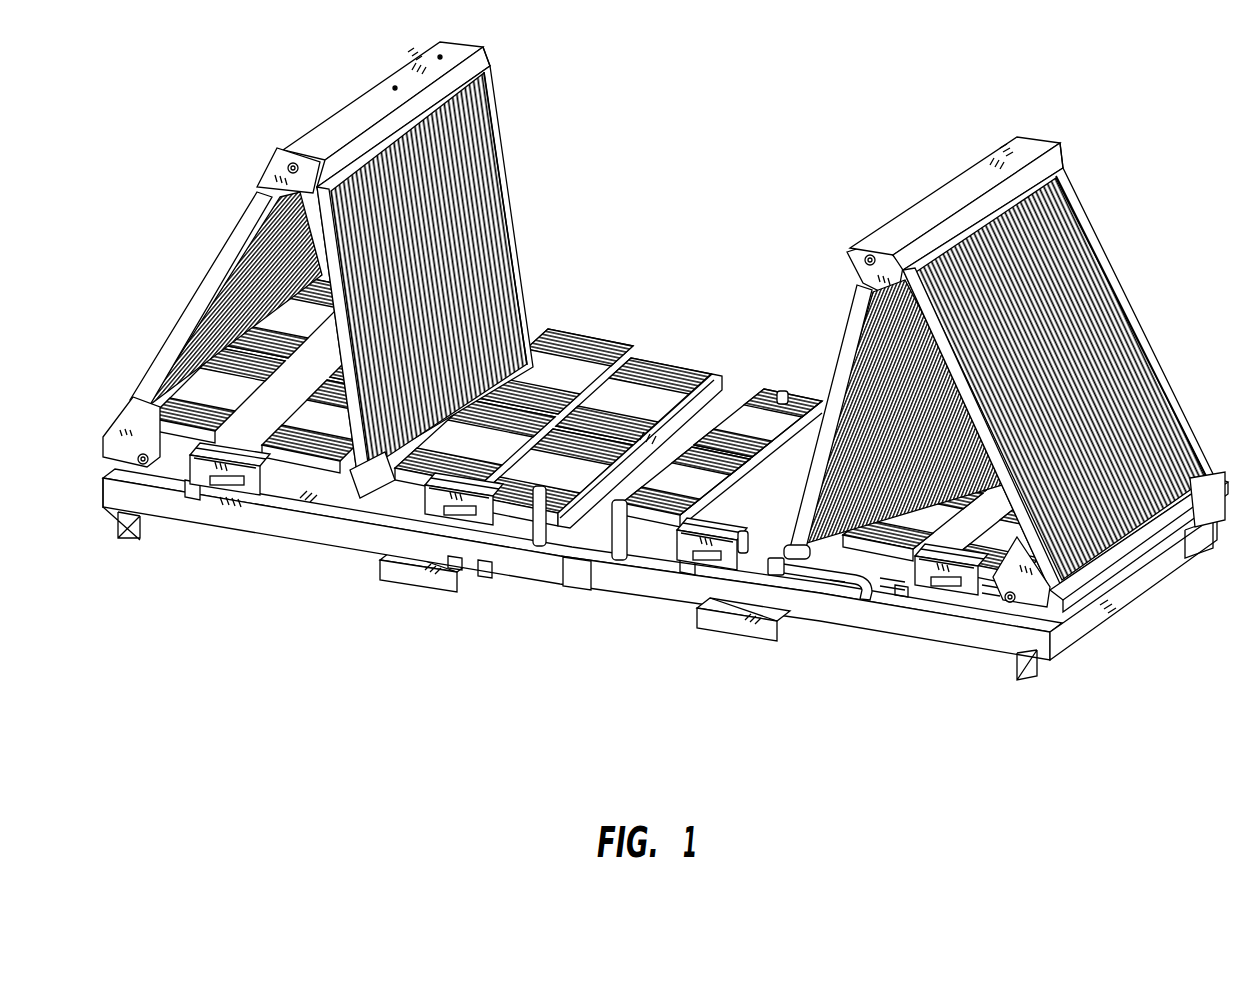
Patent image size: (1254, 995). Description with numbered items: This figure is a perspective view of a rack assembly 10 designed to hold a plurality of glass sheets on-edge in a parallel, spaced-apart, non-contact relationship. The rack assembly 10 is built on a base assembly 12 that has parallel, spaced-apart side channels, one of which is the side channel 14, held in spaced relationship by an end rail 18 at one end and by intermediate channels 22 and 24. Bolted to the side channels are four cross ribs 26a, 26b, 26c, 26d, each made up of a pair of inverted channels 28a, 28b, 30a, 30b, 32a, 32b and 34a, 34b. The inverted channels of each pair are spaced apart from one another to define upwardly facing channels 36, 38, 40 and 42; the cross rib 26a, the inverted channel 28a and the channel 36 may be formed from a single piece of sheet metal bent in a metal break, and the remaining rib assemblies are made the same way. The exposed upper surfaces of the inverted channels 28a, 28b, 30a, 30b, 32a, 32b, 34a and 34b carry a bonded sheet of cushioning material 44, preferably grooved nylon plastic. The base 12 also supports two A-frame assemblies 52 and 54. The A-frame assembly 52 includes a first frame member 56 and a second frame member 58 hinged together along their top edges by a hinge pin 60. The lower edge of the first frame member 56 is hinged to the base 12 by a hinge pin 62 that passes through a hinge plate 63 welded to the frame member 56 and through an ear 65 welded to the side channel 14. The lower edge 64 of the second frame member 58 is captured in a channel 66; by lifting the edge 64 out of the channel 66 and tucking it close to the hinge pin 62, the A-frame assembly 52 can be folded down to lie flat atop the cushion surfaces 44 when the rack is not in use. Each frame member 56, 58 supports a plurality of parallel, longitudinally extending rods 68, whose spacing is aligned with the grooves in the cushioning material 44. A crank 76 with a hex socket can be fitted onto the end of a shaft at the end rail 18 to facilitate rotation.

The rack assembly 10 is at (603, 206).
The base assembly 12 is at (286, 548).
The side channel 14 is at (530, 565).
The end rail 18 is at (1212, 508).
The intermediate channel 22 is at (713, 625).
The intermediate channel 24 is at (455, 559).
The cross rib 26a is at (958, 602).
The cross rib 26b is at (628, 524).
The cross rib 26c is at (421, 488).
The cross rib 26d is at (278, 480).
The inverted channel 28a is at (890, 584).
The inverted channel 28b is at (992, 592).
The inverted channel 30a is at (750, 557).
The inverted channel 30b is at (625, 549).
The inverted channel 32a is at (575, 471).
The inverted channel 32b is at (484, 441).
The inverted channel 34a is at (335, 441).
The inverted channel 34b is at (207, 419).
The upwardly facing channel 36 is at (900, 590).
The upwardly facing channel 38 is at (686, 552).
The upwardly facing channel 40 is at (484, 574).
The upwardly facing channel 42 is at (197, 486).
The cushioning material 44 is at (695, 491).
The A-frame assembly 52 is at (1034, 363).
The A-frame assembly 54 is at (243, 207).
The first frame member 56 is at (1128, 303).
The second frame member 58 is at (828, 378).
The hinge pin 60 is at (294, 160).
The hinge pin 62 is at (1050, 606).
The hinge plate 63 is at (1046, 597).
The lower edge 64 is at (816, 574).
The ear 65 is at (1004, 614).
The channel 66 is at (835, 587).
The rods 68 is at (1140, 375).
The crank 76 is at (880, 594).